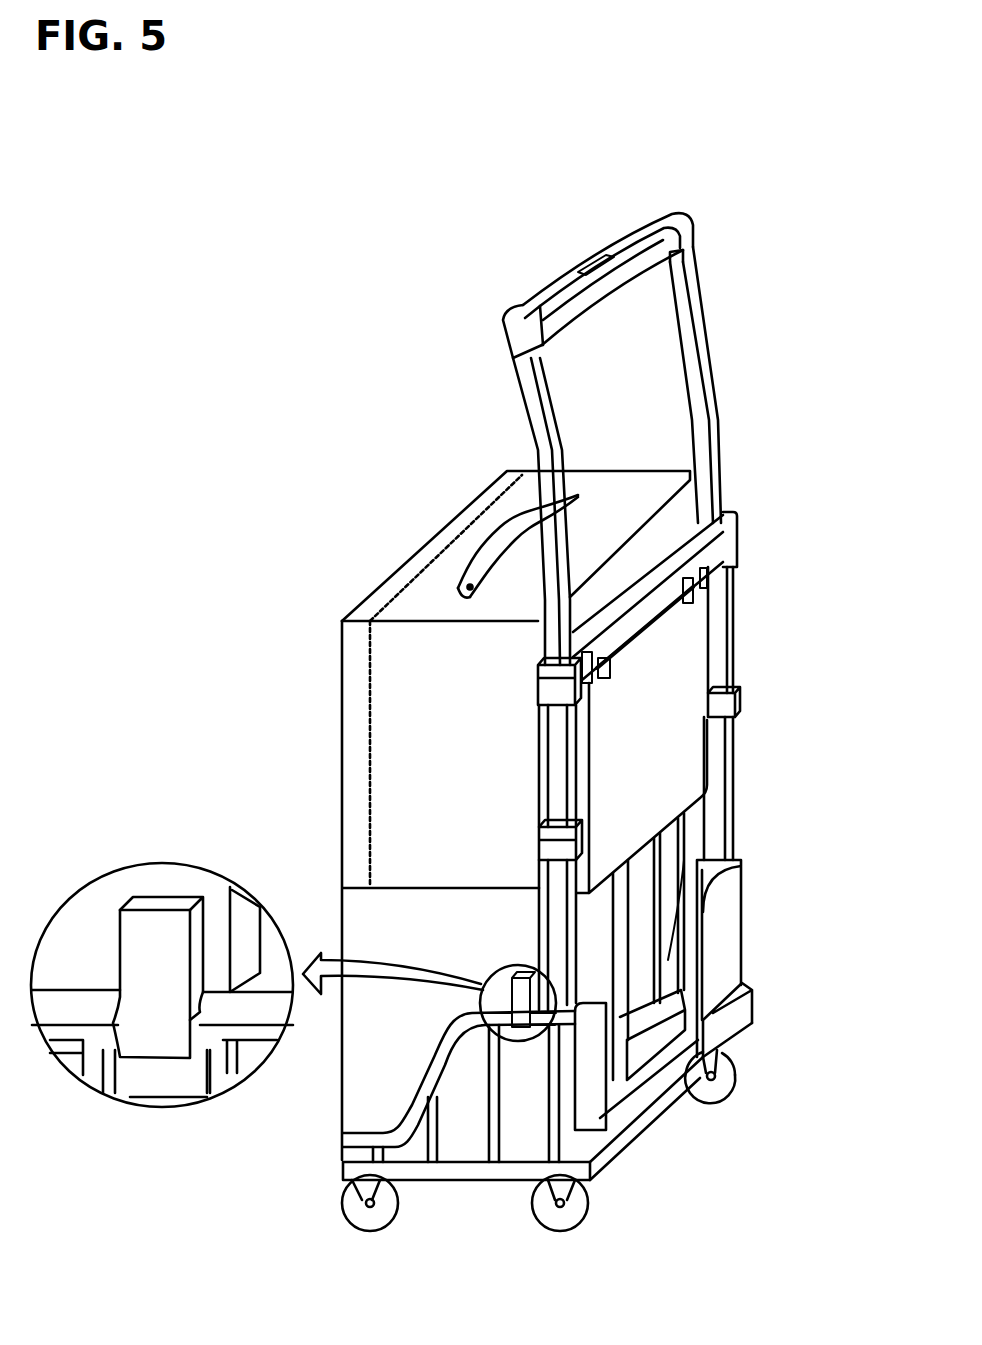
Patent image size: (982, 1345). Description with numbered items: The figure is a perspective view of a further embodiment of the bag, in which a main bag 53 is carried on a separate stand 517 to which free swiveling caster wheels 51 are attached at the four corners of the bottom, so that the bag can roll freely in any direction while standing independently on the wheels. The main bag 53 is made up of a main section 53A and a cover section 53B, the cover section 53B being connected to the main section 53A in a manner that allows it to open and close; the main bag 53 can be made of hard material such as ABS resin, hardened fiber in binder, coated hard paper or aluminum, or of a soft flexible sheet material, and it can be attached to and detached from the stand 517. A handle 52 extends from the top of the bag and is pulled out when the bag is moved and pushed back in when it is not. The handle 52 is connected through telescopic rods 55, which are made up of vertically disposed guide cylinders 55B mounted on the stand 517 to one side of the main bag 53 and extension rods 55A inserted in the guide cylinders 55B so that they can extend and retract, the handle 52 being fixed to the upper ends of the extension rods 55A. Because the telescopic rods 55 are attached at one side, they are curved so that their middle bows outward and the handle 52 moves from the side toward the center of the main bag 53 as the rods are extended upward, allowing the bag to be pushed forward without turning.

The free swiveling caster wheels 51 is at (769, 1065).
The handle 52 is at (618, 238).
The main bag 53 is at (222, 605).
The main section 53A is at (430, 640).
The cover section 53B is at (345, 658).
The telescopic rods 55 is at (835, 425).
The extension rods 55A is at (713, 382).
The guide cylinders 55B is at (725, 600).
The stand 517 is at (467, 1180).